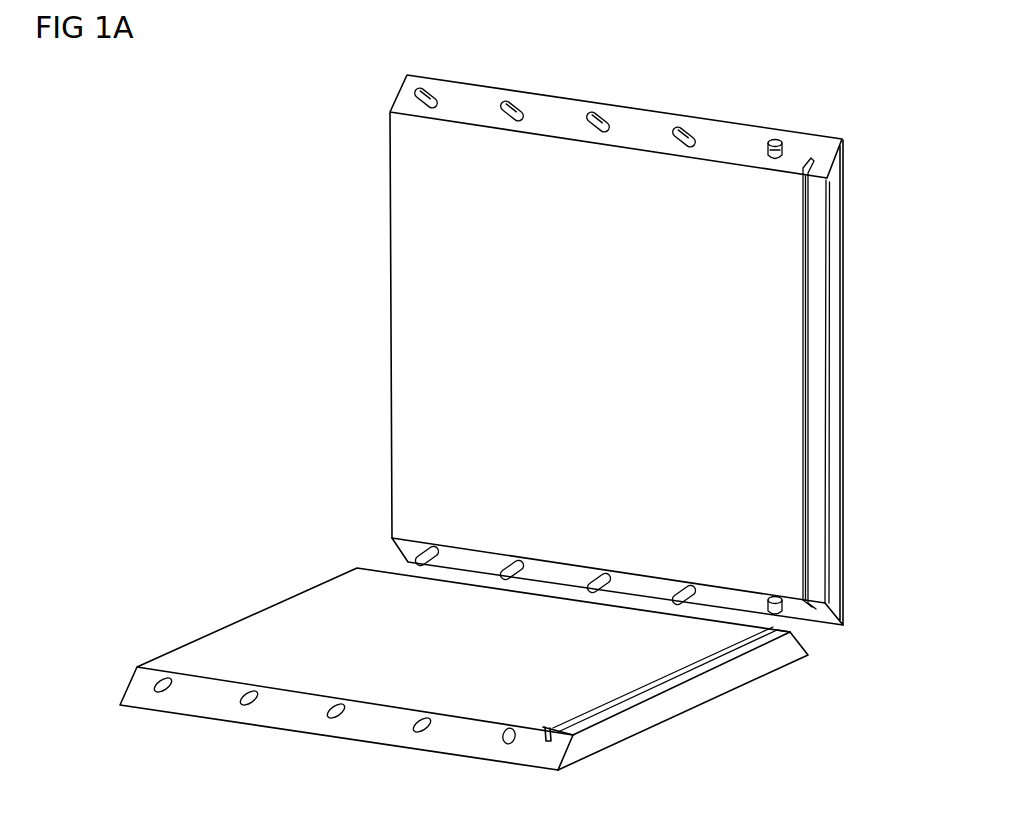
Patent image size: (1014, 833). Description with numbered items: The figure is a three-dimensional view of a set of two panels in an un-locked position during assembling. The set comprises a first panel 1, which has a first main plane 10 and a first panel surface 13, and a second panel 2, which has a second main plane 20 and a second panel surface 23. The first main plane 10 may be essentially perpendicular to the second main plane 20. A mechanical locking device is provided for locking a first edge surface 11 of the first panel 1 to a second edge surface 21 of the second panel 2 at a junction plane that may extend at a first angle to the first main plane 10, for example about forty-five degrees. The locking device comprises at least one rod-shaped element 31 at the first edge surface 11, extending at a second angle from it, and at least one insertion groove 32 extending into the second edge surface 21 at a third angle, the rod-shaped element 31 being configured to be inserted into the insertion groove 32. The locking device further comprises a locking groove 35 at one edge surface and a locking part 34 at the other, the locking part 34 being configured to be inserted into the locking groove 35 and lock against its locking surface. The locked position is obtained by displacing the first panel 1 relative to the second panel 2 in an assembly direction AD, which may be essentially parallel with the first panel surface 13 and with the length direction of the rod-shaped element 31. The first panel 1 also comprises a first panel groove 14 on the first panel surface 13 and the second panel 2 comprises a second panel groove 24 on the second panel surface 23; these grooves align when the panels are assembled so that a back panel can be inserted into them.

The first panel 1 is at (843, 562).
The second panel 2 is at (790, 668).
The first main plane 10 is at (430, 310).
The first edge surface 11 is at (813, 147).
The first panel surface 13 is at (775, 365).
The first panel groove 14 is at (805, 427).
The second main plane 20 is at (293, 625).
The second edge surface 21 is at (528, 757).
The second panel surface 23 is at (617, 680).
The second panel groove 24 is at (683, 673).
The rod-shaped element 31 is at (417, 92).
The insertion groove 32 is at (160, 687).
The locking part 34 is at (773, 140).
The locking groove 35 is at (500, 735).
The assembly direction AD is at (555, 513).